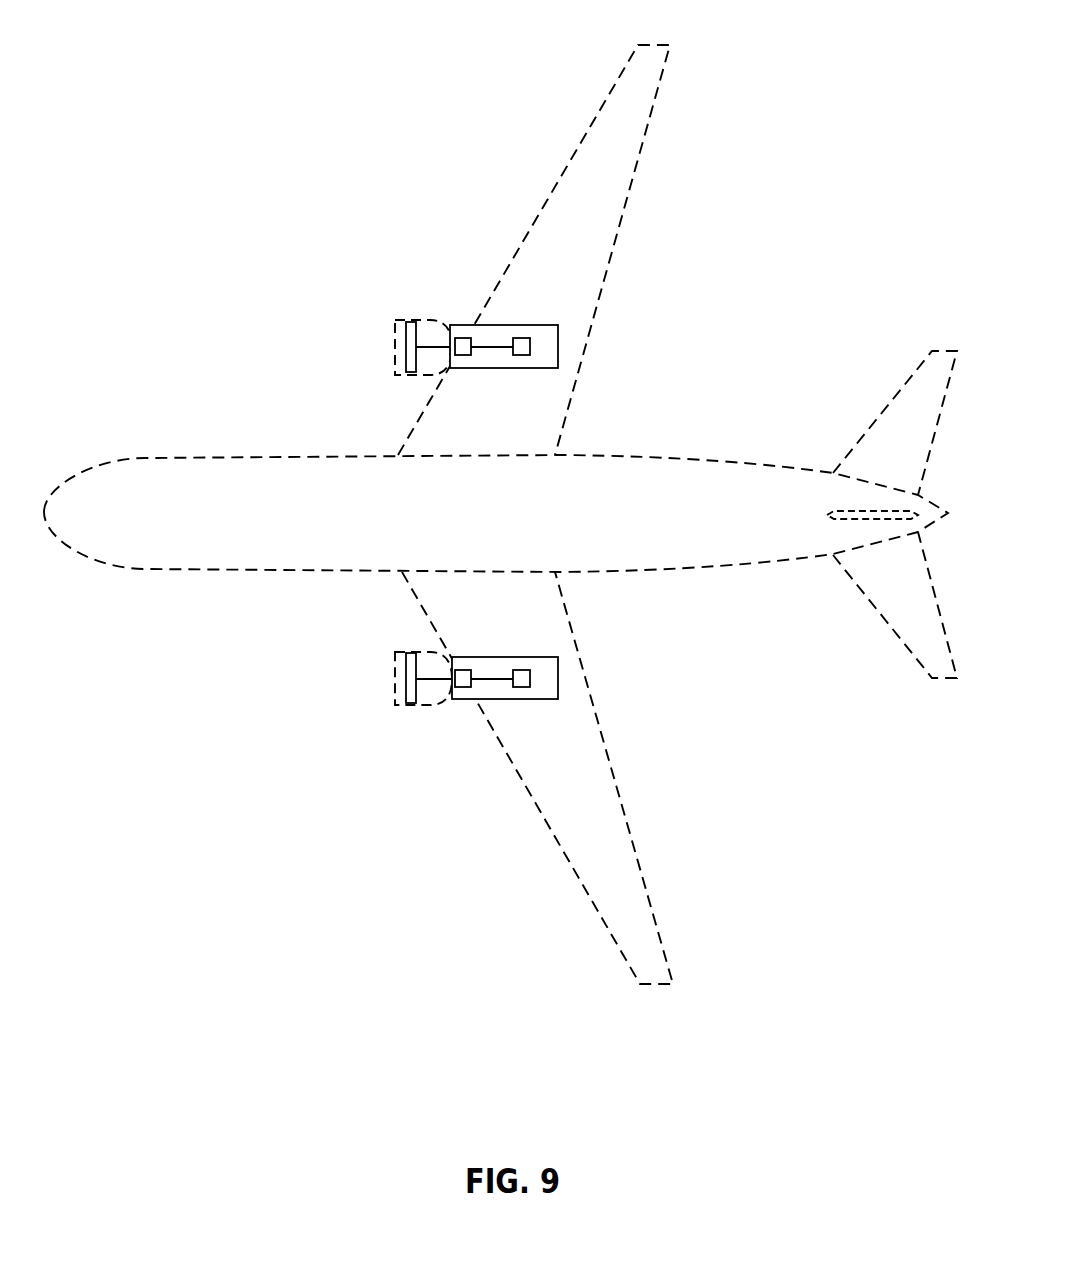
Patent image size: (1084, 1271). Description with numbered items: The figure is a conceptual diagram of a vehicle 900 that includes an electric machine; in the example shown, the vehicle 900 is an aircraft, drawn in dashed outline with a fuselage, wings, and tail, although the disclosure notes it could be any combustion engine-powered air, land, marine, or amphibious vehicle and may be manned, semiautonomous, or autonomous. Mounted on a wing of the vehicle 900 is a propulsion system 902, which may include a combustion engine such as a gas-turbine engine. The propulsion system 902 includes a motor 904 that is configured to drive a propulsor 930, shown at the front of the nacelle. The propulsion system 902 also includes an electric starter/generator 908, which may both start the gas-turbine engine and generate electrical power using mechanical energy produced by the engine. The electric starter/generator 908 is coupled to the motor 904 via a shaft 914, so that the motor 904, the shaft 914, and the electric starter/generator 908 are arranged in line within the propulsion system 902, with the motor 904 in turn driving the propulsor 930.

The vehicle 900 is at (813, 143).
The propulsion system 902 is at (448, 333).
The motor 904 is at (462, 356).
The electric starter/generator 908 is at (521, 338).
The shaft 914 is at (505, 349).
The propulsor 930 is at (409, 374).